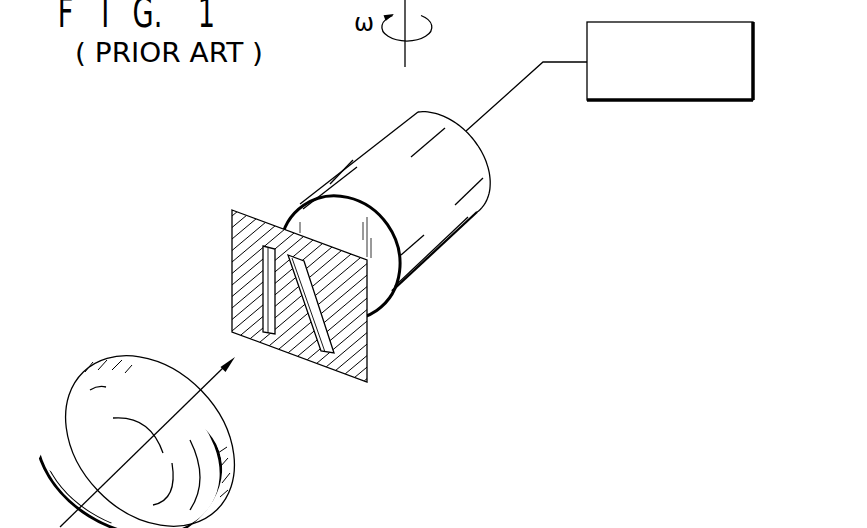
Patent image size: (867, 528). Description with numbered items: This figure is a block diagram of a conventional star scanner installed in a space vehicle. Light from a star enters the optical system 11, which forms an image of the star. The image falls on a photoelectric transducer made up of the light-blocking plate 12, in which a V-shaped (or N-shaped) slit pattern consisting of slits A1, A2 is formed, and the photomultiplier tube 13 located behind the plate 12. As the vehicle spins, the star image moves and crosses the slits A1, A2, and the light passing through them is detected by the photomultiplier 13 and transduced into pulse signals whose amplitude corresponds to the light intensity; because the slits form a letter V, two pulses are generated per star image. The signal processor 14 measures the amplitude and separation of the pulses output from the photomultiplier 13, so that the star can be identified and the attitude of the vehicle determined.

The optical system 11 is at (233, 467).
The light-blocking plate 12 is at (322, 276).
The photomultiplier tube 13 is at (443, 240).
The signal processor 14 is at (687, 100).
The slit A1 is at (268, 246).
The slit A2 is at (303, 270).